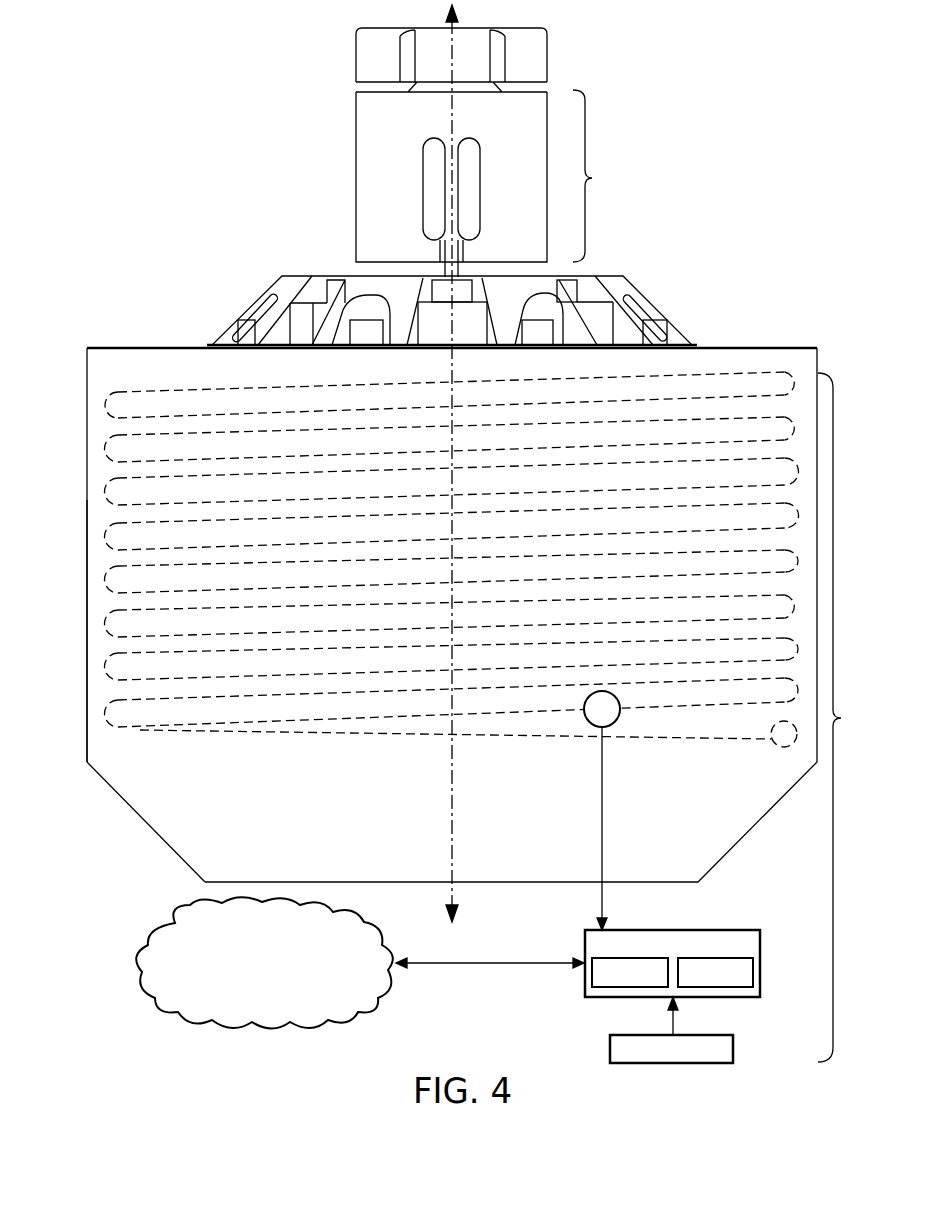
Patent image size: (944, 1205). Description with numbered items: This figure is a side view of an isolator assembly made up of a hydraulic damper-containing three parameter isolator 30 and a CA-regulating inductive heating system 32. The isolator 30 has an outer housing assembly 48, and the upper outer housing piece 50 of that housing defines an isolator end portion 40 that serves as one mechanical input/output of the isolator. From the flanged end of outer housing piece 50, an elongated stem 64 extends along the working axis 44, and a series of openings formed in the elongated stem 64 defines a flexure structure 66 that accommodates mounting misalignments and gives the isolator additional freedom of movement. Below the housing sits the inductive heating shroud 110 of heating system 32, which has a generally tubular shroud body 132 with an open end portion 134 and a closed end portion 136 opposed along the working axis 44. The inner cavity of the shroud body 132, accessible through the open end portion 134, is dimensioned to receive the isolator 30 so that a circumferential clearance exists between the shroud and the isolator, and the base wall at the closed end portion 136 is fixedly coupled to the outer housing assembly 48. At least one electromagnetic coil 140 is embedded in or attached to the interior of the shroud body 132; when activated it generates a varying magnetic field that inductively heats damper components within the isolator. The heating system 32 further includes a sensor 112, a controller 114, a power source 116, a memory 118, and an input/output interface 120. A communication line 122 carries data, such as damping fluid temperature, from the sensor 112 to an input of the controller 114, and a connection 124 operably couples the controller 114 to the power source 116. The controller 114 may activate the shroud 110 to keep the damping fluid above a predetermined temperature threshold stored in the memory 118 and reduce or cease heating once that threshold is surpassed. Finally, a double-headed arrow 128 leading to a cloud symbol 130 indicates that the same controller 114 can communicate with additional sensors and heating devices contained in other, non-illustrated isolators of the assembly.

The three parameter isolator 30 is at (243, 149).
The CA-regulating inductive heating system 32 is at (845, 717).
The isolator end portion 40 is at (537, 58).
The working axis 44 is at (452, 825).
The outer housing assembly 48 is at (617, 272).
The outer housing piece 50 is at (683, 333).
The elongated stem 64 is at (373, 183).
The flexure structure 66 is at (601, 176).
The inductive heating shroud 110 is at (84, 344).
The sensor 112 is at (596, 727).
The controller 114 is at (750, 997).
The power source 116 is at (672, 1065).
The memory 118 is at (592, 978).
The input/output (I/O) interface 120 is at (753, 975).
The communication line 122 is at (602, 905).
The connection 124 is at (673, 1025).
The double-headed arrow 128 is at (478, 964).
The cloud symbol 130 is at (268, 1027).
The shroud body 132 is at (87, 762).
The open end portion 134 is at (142, 348).
The closed end portion 136 is at (184, 864).
The electromagnetic coil 140 is at (248, 736).